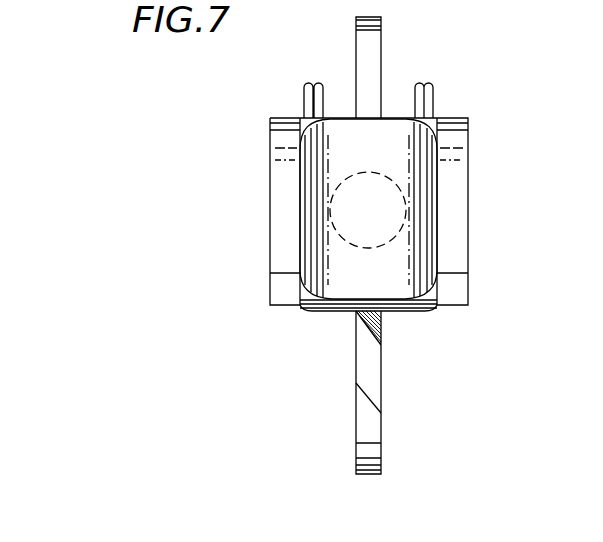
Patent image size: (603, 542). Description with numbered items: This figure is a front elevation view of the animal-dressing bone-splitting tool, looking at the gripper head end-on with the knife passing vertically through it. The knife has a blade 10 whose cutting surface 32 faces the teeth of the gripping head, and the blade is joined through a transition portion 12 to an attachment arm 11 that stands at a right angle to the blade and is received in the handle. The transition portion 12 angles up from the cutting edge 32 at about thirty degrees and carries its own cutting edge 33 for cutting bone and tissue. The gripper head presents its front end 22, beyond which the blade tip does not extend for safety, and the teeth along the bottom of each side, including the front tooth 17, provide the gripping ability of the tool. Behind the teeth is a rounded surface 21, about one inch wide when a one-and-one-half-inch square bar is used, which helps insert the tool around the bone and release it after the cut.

The blade 10 is at (381, 437).
The attachment arm 11 is at (381, 40).
The transition portion 12 is at (381, 380).
The front tooth 17 is at (283, 305).
The rounded surface 21 is at (410, 313).
The front end 22 is at (283, 290).
The cutting surface 32 is at (356, 383).
The cutting edge 33 is at (356, 353).